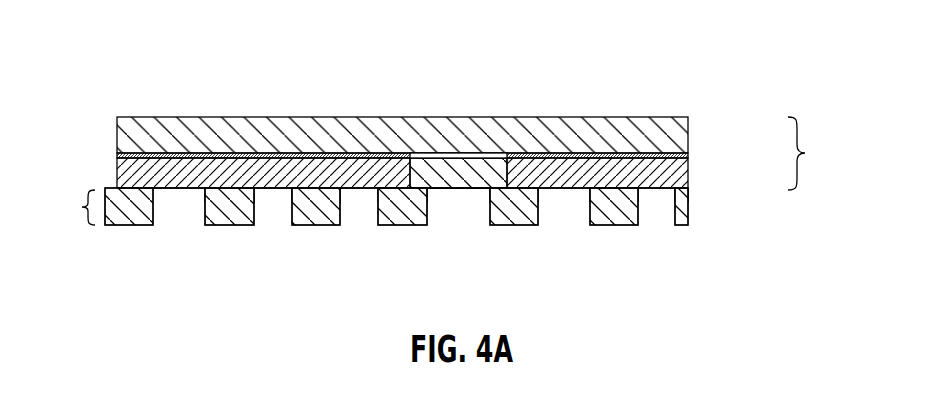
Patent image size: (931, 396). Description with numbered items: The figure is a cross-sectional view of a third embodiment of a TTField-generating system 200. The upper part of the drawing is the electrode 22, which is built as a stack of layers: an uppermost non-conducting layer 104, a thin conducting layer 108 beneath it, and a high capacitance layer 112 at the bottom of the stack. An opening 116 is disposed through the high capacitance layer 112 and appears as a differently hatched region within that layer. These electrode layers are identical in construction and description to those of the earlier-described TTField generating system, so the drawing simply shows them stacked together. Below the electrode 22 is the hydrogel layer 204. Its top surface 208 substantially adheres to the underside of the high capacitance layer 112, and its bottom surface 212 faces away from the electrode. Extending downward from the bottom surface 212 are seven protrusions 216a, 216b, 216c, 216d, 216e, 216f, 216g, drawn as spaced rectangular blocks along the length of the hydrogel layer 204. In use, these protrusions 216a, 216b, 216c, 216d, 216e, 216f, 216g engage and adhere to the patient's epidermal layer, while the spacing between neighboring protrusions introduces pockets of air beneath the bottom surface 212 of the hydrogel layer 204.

The TTField-generating system 200 is at (717, 42).
The electrode 22 is at (812, 153).
The non-conducting layer 104 is at (690, 127).
The conducting layer 108 is at (690, 155).
The high capacitance layer 112 is at (690, 177).
The opening 116 is at (475, 173).
The hydrogel layer 204 is at (64, 207).
The top surface 208 is at (164, 188).
The bottom surface 212 is at (178, 209).
The protrusion 216a is at (130, 226).
The protrusion 216b is at (220, 226).
The protrusion 216c is at (317, 227).
The protrusion 216d is at (402, 227).
The protrusion 216e is at (513, 227).
The protrusion 216f is at (605, 227).
The protrusion 216g is at (684, 216).